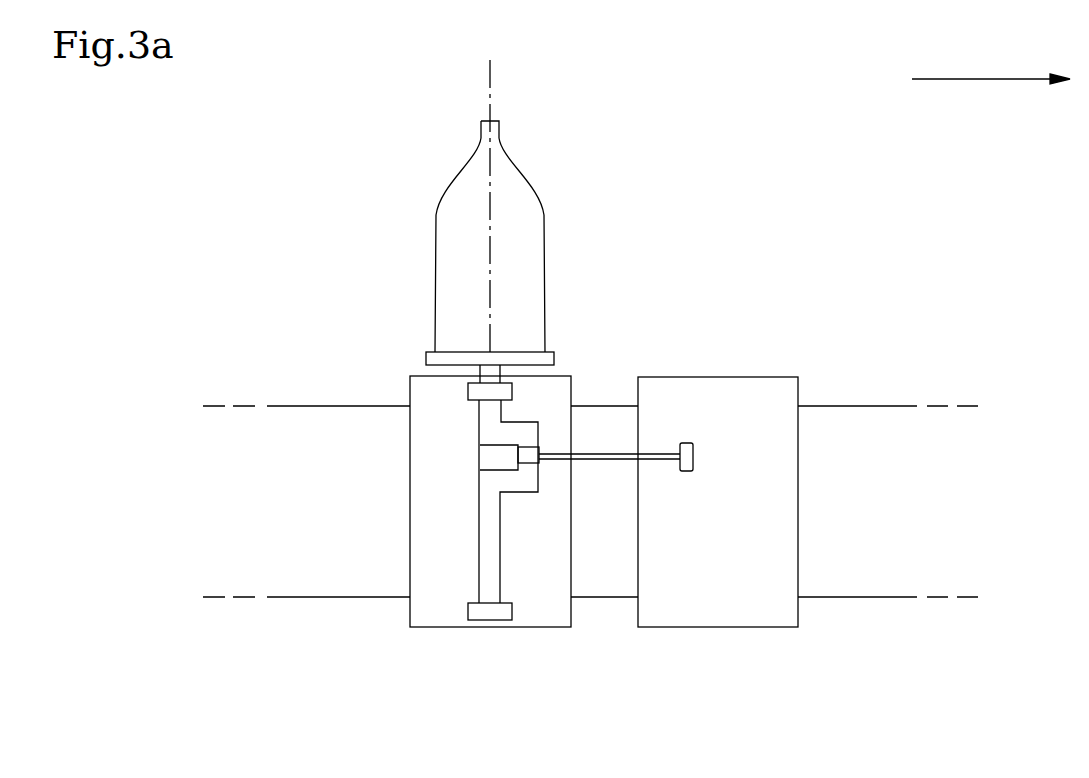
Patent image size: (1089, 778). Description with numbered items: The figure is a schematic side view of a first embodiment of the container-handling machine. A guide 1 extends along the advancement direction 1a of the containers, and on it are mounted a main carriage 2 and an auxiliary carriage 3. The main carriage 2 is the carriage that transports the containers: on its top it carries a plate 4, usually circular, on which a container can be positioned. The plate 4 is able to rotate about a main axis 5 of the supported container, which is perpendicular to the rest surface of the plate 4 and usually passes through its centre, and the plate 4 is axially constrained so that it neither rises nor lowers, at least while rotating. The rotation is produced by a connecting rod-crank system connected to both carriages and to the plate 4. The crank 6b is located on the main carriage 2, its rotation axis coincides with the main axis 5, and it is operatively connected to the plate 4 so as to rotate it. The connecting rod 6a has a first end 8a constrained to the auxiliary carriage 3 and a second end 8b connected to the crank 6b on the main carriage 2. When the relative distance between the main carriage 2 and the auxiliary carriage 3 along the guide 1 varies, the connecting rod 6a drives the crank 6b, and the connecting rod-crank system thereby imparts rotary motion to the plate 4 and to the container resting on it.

The guide 1 is at (918, 557).
The advancement direction 1a is at (991, 58).
The main carriage 2 is at (547, 600).
The auxiliary carriage 3 is at (748, 601).
The plate 4 is at (437, 360).
The main axis 5 is at (490, 88).
The connecting rod 6a is at (628, 453).
The crank 6b is at (507, 432).
The first end 8a is at (693, 455).
The second end 8b is at (517, 450).